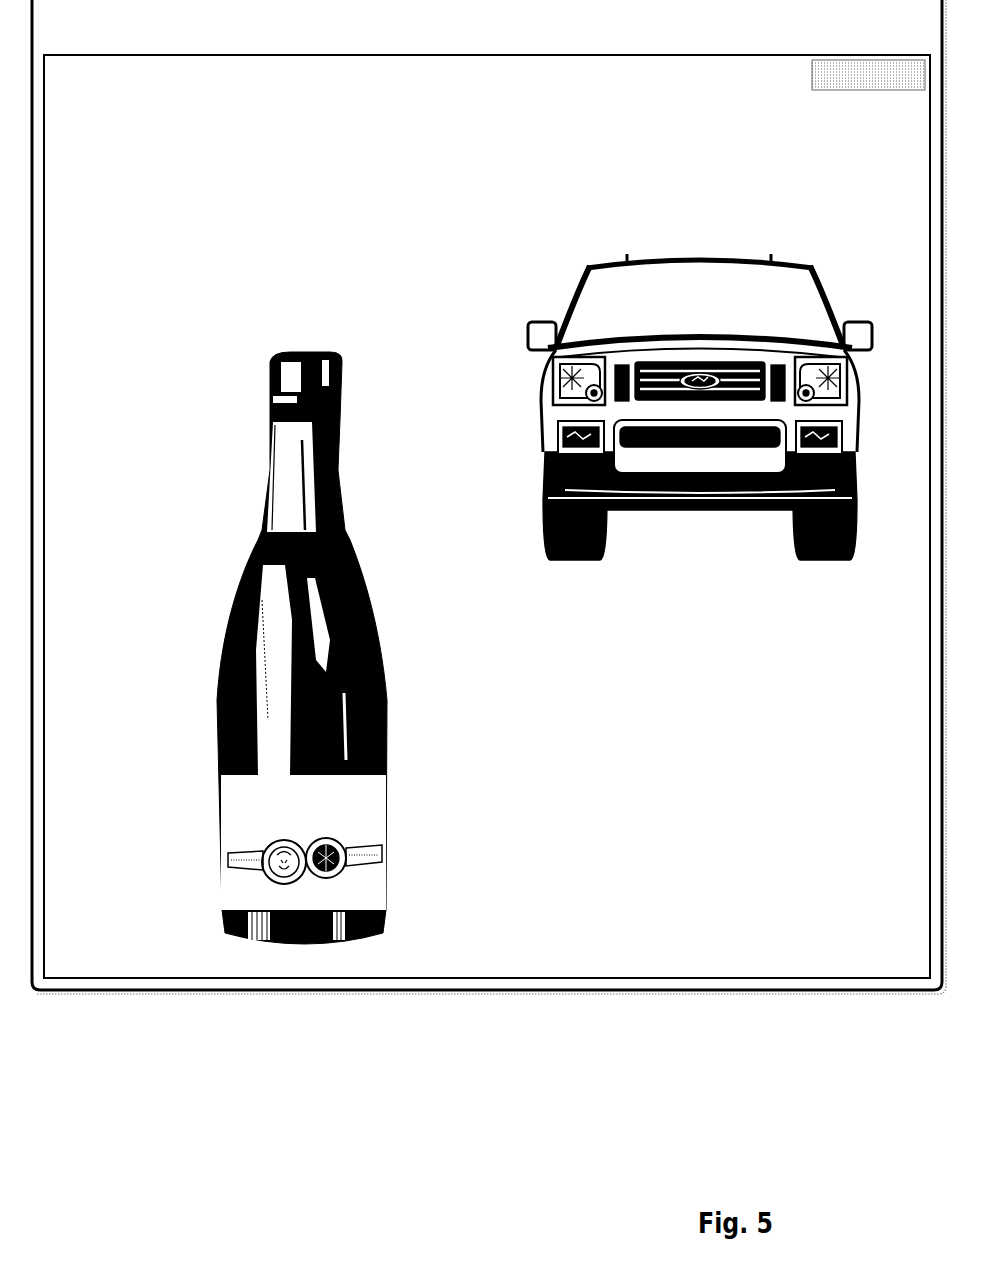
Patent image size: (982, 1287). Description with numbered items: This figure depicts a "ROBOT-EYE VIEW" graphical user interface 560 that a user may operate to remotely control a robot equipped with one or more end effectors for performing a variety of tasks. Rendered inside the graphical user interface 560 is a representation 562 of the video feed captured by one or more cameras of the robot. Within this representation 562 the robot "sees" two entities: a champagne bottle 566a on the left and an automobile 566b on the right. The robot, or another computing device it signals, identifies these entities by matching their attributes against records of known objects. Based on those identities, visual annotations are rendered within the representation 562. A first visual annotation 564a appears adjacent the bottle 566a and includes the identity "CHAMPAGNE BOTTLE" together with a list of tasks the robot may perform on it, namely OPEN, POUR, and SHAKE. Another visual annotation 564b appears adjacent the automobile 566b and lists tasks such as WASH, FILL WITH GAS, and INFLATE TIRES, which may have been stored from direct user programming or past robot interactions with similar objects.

The graphical user interface 560 is at (580, 56).
The representation of a video feed 562 is at (277, 138).
The first visual annotation 564a is at (132, 512).
The visual annotation 564b is at (609, 130).
The champagne bottle 566a is at (357, 590).
The automobile 566b is at (602, 560).